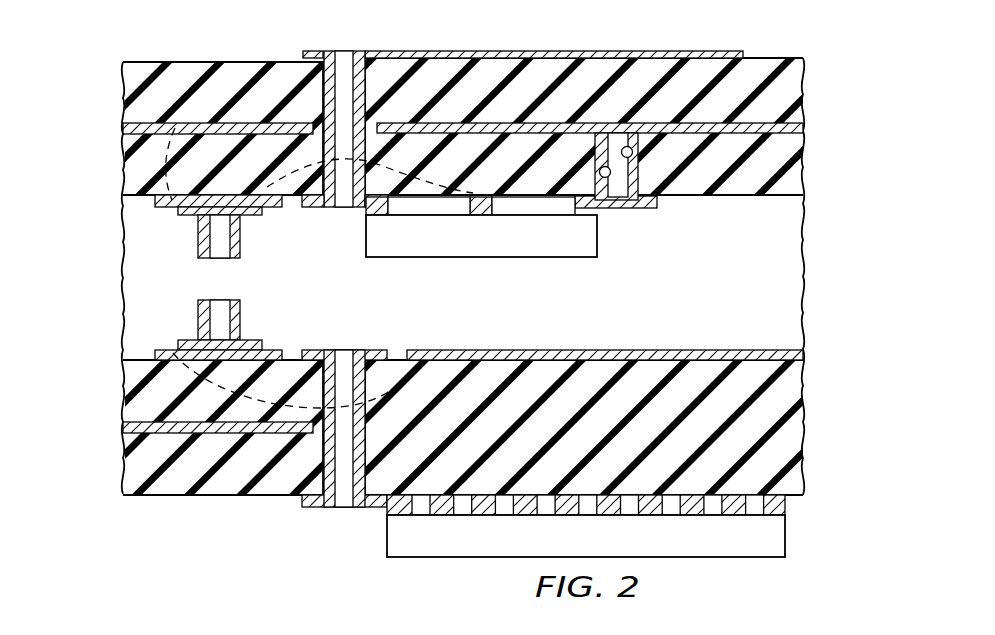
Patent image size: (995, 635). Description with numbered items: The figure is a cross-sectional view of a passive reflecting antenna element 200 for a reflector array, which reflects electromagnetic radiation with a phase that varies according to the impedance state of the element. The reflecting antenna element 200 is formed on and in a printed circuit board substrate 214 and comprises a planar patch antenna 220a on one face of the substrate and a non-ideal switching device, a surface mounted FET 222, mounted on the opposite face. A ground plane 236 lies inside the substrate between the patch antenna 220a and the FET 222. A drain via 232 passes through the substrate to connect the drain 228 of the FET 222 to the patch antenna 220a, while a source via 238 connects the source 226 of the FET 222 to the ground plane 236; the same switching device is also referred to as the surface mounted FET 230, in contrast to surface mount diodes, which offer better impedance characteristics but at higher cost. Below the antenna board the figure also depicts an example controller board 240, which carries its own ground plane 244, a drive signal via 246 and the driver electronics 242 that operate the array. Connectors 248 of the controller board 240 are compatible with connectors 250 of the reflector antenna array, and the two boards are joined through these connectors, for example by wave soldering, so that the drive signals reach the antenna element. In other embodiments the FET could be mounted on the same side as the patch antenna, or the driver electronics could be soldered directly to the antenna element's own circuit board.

The reflecting antenna element 200 is at (99, 380).
The printed circuit board substrate 214 is at (123, 78).
The patch antenna 220a is at (323, 52).
The surface mounted field effect transistor 222 is at (366, 240).
The source 226 is at (600, 208).
The drain 228 is at (366, 206).
The surface mounted FET 230 is at (500, 216).
The drain via 232 is at (326, 62).
The ground plane 236 is at (123, 128).
The source via 238 is at (633, 152).
The controller board 240 is at (685, 337).
The driver electronics 242 is at (785, 552).
The ground plane 244 is at (805, 357).
The drive signal via 246 is at (345, 350).
The connectors 248 is at (198, 318).
The connectors 250 is at (198, 238).